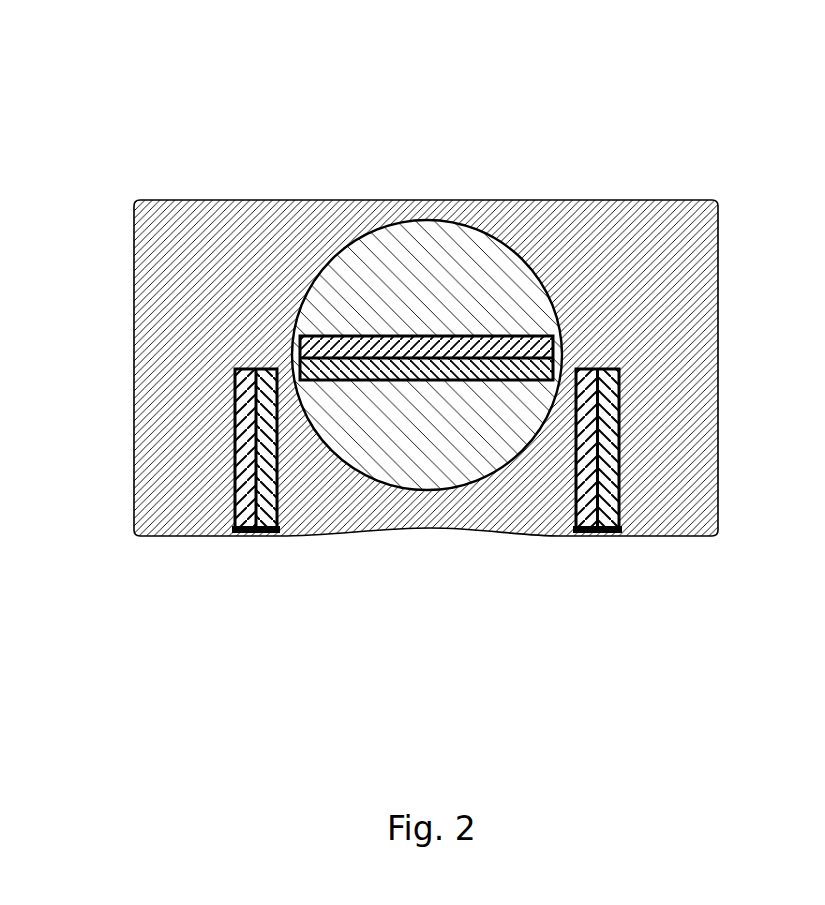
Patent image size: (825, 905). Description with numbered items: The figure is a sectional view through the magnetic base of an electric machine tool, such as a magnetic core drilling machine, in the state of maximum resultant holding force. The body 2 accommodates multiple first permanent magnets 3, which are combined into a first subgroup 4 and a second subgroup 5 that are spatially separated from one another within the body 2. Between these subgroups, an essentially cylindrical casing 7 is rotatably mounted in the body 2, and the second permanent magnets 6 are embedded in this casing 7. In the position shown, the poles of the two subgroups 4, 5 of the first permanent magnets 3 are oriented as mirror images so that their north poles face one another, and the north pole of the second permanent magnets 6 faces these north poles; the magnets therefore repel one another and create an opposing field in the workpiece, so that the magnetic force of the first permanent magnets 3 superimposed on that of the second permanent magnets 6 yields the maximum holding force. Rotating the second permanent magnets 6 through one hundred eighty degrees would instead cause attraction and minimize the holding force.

The body 2 is at (613, 230).
The first permanent magnets 3 is at (427, 541).
The first subgroup 4 is at (575, 529).
The second subgroup 5 is at (270, 531).
The second permanent magnets 6 is at (368, 345).
The cylindrical casing 7 is at (427, 265).